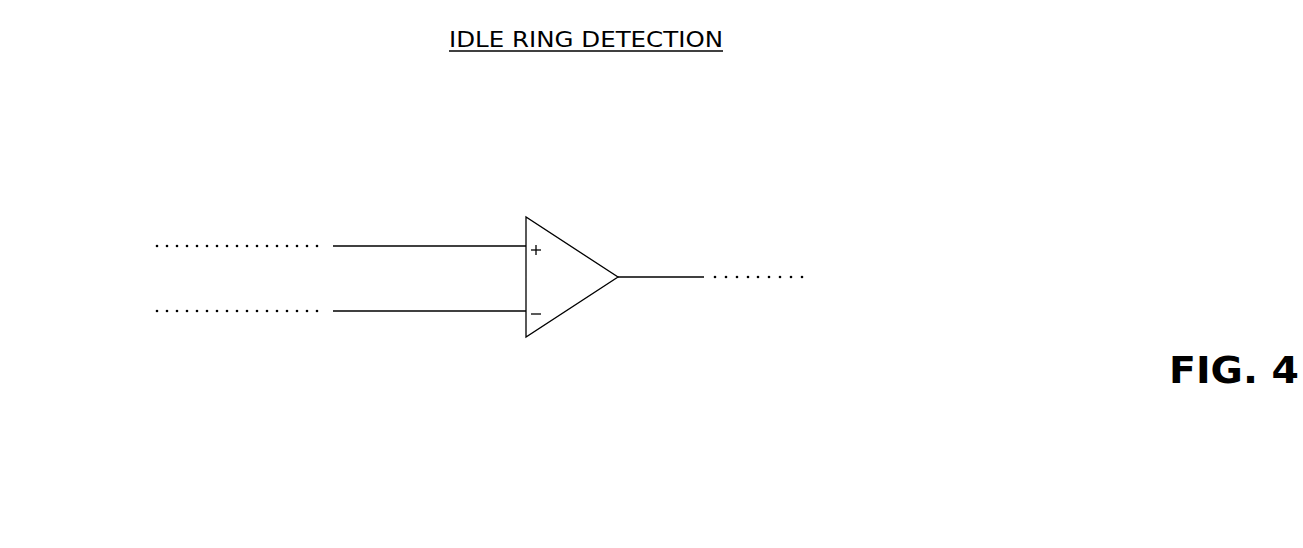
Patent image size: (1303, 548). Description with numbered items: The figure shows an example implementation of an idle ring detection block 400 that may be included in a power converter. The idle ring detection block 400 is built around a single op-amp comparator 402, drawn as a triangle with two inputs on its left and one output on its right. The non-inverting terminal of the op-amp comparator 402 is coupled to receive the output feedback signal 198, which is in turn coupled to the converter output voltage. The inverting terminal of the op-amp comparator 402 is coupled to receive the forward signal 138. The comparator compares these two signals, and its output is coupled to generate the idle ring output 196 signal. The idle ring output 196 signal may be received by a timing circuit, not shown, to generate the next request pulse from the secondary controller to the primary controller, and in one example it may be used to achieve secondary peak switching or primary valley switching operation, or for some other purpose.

The idle ring detection block 400 is at (1282, 51).
The op-amp comparator 402 is at (568, 231).
The signal VO1_FB 198 is at (437, 208).
The signal FWD 138 is at (445, 353).
The idle ring output signal 196 is at (678, 296).